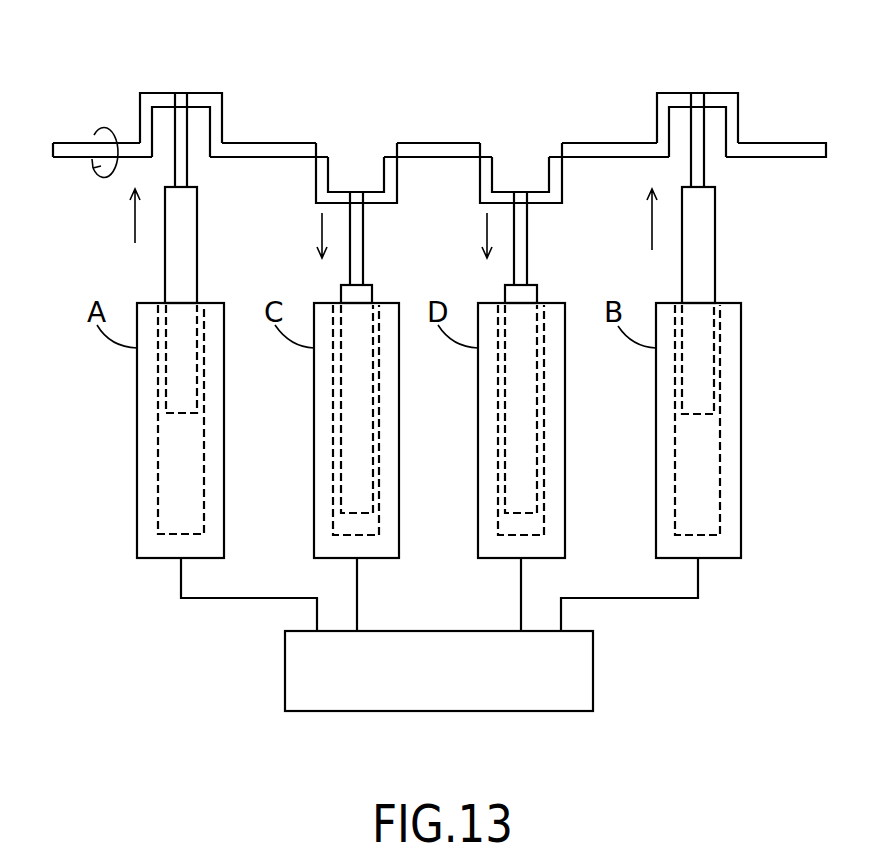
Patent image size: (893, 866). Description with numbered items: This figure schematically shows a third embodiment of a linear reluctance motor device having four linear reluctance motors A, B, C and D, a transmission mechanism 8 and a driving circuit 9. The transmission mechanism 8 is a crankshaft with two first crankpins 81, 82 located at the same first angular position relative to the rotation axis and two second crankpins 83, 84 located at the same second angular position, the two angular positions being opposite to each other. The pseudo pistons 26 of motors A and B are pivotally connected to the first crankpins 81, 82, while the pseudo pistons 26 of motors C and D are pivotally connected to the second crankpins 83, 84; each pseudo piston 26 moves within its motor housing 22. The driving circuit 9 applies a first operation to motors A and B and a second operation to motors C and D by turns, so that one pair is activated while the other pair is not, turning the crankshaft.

The transmission mechanism 8 is at (79, 143).
The first crankpin 81 is at (201, 93).
The first crankpin 82 is at (717, 93).
The second crankpin 83 is at (342, 192).
The second crankpin 84 is at (508, 192).
The pseudo piston 26 is at (197, 242).
The cylinder 22 is at (204, 474).
The driving circuit 9 is at (593, 661).